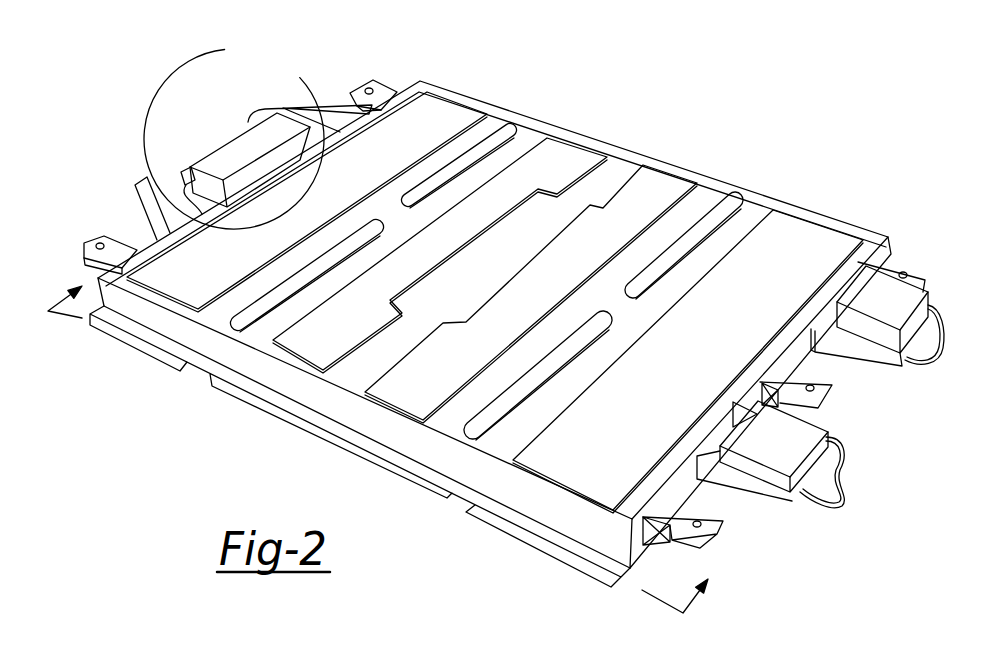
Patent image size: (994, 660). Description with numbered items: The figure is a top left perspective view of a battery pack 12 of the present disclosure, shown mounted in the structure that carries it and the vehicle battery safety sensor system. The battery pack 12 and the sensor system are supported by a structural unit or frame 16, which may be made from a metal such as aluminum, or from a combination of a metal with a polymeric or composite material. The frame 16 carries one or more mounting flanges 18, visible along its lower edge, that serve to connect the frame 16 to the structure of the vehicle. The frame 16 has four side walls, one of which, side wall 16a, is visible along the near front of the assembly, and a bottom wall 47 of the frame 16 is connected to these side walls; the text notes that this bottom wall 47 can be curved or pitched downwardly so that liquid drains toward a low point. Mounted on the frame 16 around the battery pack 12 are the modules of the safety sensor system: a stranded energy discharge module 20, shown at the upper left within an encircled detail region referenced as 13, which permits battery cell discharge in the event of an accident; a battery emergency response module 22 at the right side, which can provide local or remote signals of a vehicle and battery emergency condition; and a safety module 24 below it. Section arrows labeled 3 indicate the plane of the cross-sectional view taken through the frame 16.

The battery pack 12 is at (797, 149).
The detail view callout 13 is at (234, 131).
The frame 16 is at (640, 548).
The side wall 16a is at (553, 520).
The mounting flange 18 is at (173, 349).
The stranded energy discharge module 20 is at (221, 162).
The battery emergency response module 22 is at (925, 291).
The safety module 24 is at (808, 442).
The bottom wall 47 is at (704, 191).
The section view indicator 3 is at (369, 472).